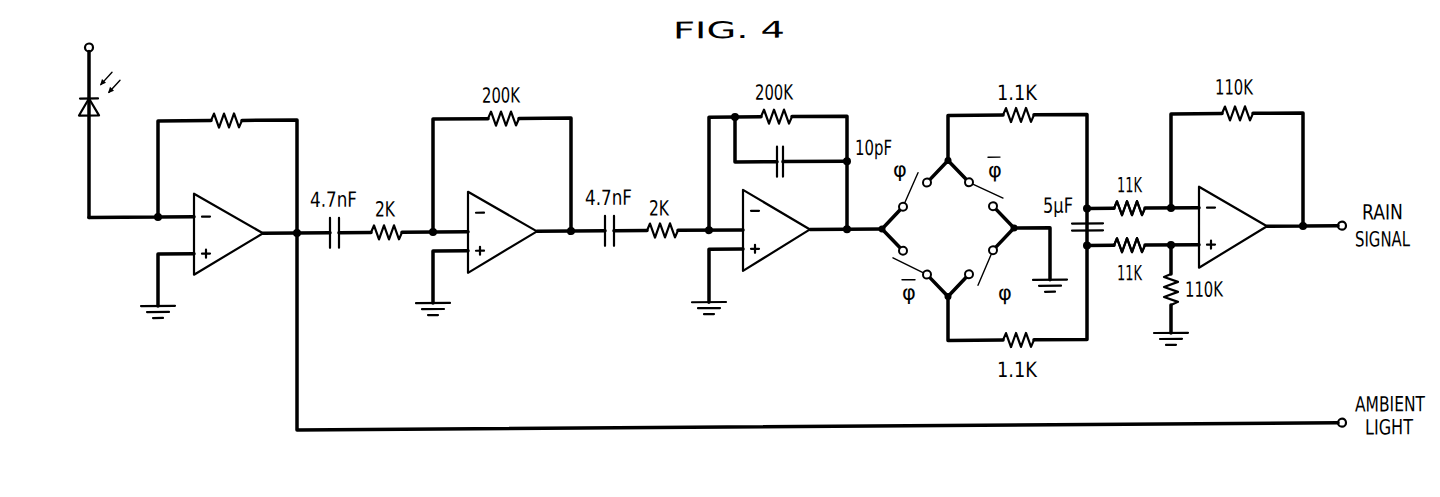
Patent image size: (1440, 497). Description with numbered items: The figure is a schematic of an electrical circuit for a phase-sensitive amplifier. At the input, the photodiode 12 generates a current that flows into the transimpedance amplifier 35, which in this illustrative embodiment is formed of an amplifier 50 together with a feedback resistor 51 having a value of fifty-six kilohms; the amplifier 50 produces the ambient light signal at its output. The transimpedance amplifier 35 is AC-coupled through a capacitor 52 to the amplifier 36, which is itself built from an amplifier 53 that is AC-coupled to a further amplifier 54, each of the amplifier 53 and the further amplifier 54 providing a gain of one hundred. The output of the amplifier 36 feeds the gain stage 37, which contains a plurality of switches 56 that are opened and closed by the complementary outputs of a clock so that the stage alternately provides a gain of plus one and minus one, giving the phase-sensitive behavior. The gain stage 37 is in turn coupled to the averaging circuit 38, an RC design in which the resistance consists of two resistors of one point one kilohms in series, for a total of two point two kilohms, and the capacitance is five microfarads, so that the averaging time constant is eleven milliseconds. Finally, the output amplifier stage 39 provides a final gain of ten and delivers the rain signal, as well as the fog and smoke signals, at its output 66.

The photodiode 12 is at (86, 116).
The transimpedance amplifier 35 is at (219, 236).
The amplifier 36 is at (572, 288).
The gain stage 37 is at (940, 256).
The averaging circuit 38 is at (1133, 296).
The output amplifier stage 39 is at (1234, 272).
The amplifier 50 is at (226, 258).
The feedback resistor 51 is at (229, 125).
The capacitor 52 is at (339, 249).
The amplifier 53 is at (514, 244).
The further amplifier 54 is at (777, 252).
The switches 56 is at (913, 187).
The output 66 is at (1340, 225).